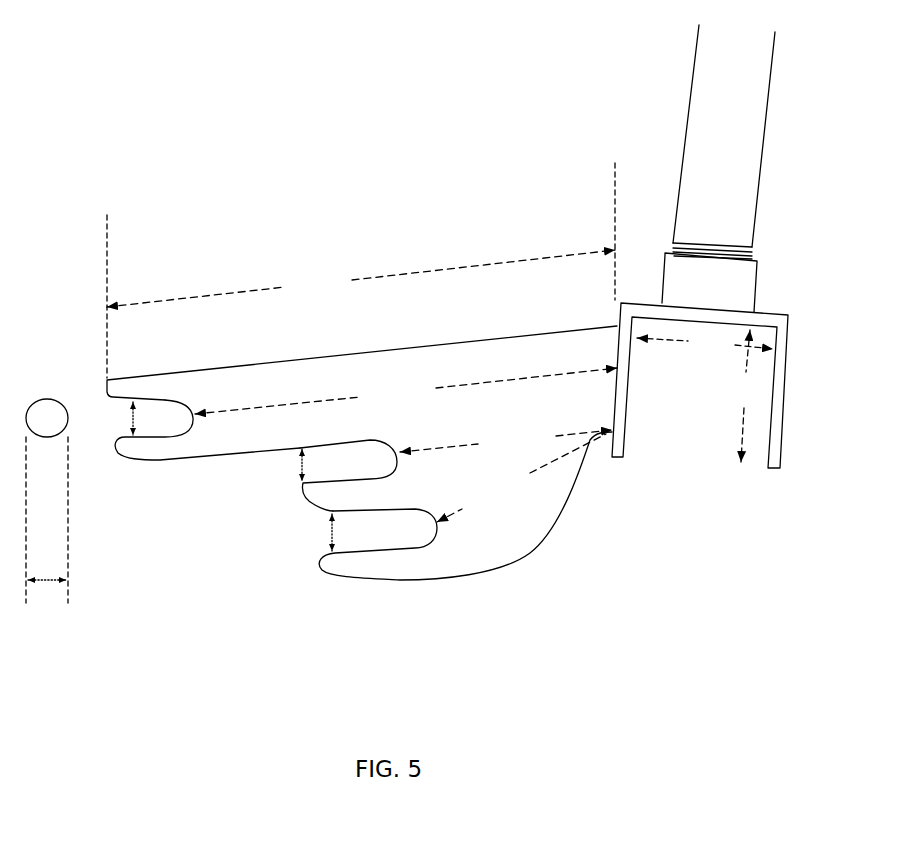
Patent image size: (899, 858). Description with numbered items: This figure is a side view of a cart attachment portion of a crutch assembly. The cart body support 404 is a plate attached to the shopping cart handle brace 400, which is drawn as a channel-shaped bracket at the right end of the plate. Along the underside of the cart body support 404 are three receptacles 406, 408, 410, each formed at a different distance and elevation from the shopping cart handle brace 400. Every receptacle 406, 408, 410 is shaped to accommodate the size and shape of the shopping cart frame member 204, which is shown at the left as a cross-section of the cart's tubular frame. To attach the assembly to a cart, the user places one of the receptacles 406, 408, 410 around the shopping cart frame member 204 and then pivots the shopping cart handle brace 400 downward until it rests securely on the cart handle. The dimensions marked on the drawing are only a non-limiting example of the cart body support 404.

The shopping cart frame member 204 is at (50, 420).
The shopping cart handle brace 400 is at (768, 458).
The cart body support 404 is at (449, 345).
The receptacle 406 is at (177, 423).
The receptacle 408 is at (358, 463).
The receptacle 410 is at (408, 530).